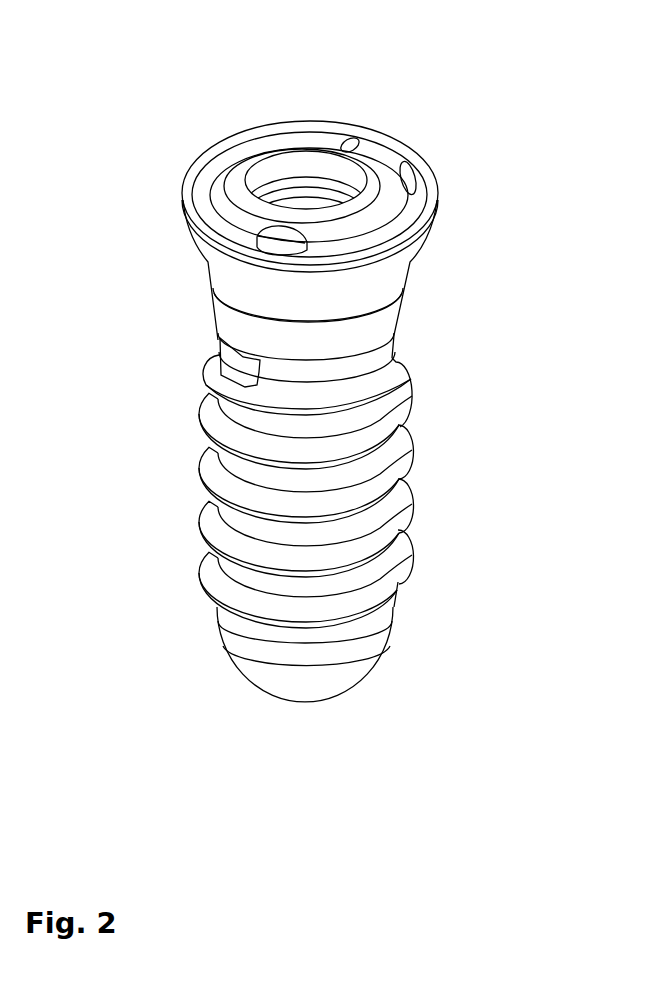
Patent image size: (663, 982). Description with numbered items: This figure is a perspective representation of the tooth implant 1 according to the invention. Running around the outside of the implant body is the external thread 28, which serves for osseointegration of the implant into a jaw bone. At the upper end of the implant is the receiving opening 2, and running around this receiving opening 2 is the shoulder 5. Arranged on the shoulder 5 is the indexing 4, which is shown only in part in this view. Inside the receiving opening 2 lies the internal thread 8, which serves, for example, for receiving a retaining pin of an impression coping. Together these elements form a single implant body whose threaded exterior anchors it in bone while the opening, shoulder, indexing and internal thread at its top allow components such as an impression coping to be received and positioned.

The tooth implant 1 is at (158, 120).
The receiving opening 2 is at (302, 190).
The indexing 4 is at (410, 182).
The shoulder 5 is at (273, 132).
The internal thread 8 is at (345, 175).
The external thread 28 is at (398, 565).